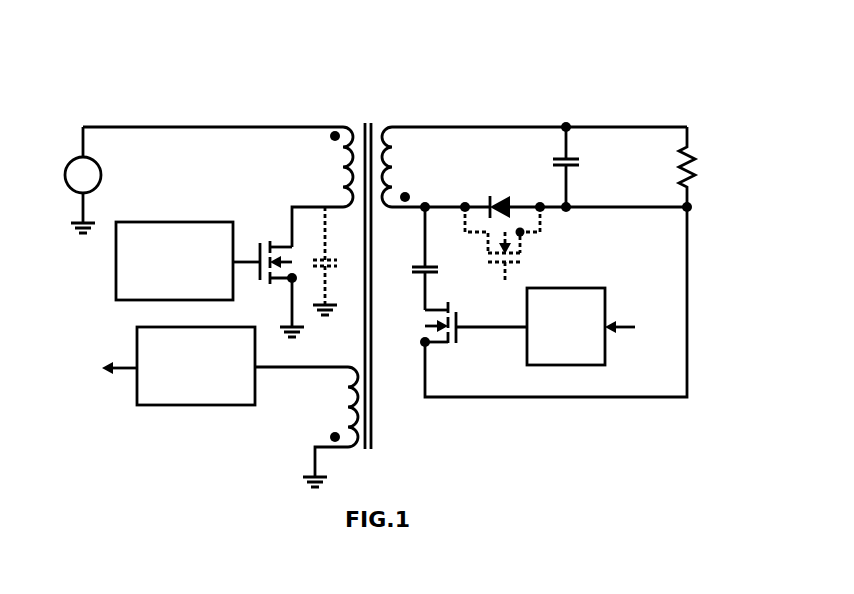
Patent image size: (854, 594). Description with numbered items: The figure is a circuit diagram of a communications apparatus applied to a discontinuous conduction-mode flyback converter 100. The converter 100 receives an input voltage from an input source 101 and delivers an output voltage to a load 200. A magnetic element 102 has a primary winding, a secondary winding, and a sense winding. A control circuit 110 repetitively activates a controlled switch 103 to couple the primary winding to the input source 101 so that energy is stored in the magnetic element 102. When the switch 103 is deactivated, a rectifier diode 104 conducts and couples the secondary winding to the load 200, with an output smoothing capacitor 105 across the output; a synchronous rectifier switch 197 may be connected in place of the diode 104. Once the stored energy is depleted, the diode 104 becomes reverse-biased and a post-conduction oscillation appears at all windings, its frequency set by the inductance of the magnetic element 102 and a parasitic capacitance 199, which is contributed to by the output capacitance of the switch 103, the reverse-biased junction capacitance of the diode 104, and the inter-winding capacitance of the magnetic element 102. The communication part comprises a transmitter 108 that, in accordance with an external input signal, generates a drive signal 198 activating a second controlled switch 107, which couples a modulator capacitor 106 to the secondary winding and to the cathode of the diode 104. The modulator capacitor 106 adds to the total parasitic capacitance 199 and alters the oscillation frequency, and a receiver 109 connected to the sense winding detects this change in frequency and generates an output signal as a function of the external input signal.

The flyback converter 100 is at (244, 108).
The input source 101 is at (106, 175).
The magnetic element 102 is at (368, 116).
The controlled switch 103 is at (272, 242).
The rectifier diode 104 is at (498, 196).
The output smoothing capacitor 105 is at (585, 162).
The modulator capacitor 106 is at (410, 267).
The second controlled switch 107 is at (417, 325).
The transmitter 108 is at (563, 283).
The receiver 109 is at (195, 412).
The control circuit 110 is at (168, 222).
The synchronous rectifier switch 197 is at (483, 247).
The drive signal 198 is at (507, 332).
The parasitic capacitance 199 is at (335, 268).
The load 200 is at (698, 142).